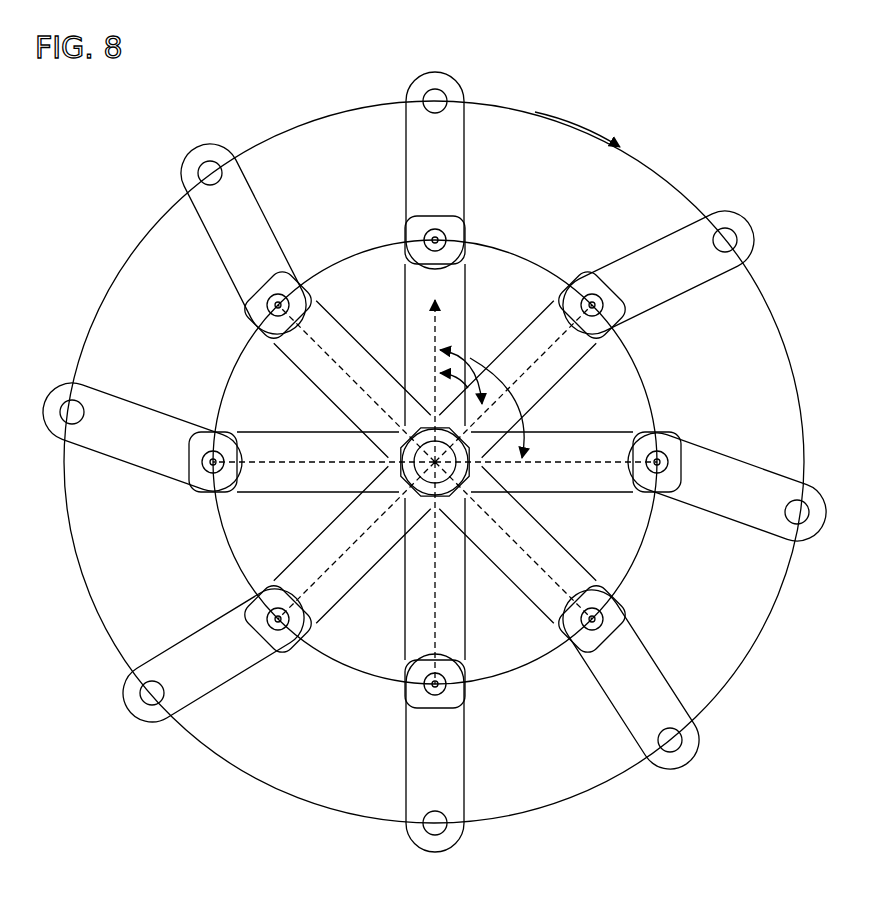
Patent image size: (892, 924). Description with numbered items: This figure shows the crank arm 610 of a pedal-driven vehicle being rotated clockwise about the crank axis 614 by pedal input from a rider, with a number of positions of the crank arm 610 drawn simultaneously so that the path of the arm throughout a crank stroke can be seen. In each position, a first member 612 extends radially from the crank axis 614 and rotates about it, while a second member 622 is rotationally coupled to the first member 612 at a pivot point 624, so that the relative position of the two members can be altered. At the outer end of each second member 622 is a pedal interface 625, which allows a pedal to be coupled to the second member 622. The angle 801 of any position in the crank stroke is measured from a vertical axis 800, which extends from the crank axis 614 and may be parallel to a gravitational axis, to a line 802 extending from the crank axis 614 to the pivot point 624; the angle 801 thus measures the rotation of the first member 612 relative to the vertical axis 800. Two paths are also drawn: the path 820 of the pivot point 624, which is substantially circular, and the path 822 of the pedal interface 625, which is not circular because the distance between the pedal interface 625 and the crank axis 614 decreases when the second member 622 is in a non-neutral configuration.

The crank arm 610 is at (503, 201).
The first member 612 is at (464, 260).
The crank axis 614 is at (408, 442).
The second member 622 is at (663, 246).
The pivot point 624 is at (273, 295).
The pedal interface 625 is at (213, 185).
The vertical axis 800 is at (433, 338).
The angle 801 is at (476, 372).
The line 802 is at (551, 374).
The path of the pivot point 820 is at (374, 253).
The path of the pedal interface 822 is at (340, 113).